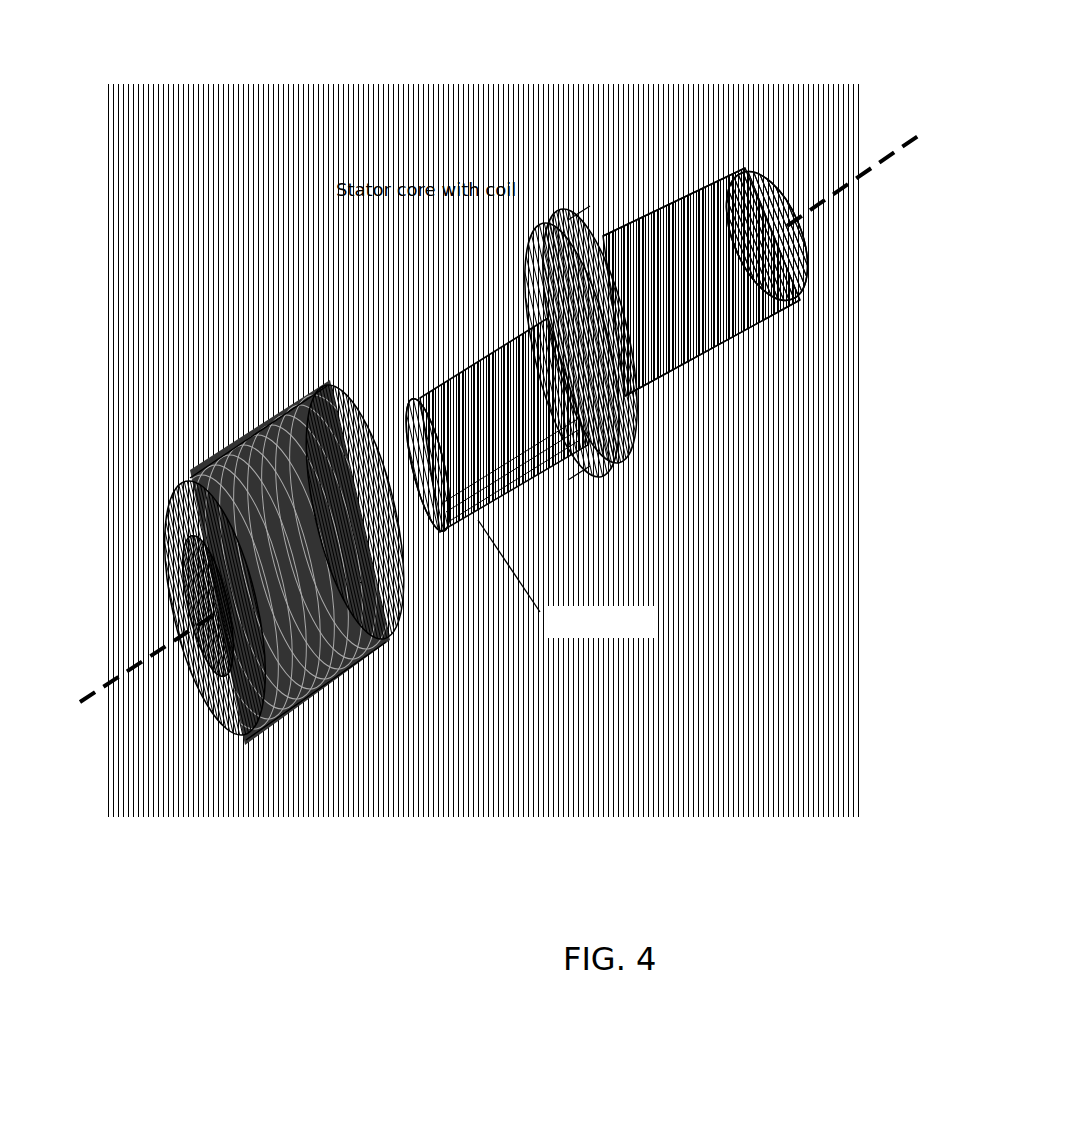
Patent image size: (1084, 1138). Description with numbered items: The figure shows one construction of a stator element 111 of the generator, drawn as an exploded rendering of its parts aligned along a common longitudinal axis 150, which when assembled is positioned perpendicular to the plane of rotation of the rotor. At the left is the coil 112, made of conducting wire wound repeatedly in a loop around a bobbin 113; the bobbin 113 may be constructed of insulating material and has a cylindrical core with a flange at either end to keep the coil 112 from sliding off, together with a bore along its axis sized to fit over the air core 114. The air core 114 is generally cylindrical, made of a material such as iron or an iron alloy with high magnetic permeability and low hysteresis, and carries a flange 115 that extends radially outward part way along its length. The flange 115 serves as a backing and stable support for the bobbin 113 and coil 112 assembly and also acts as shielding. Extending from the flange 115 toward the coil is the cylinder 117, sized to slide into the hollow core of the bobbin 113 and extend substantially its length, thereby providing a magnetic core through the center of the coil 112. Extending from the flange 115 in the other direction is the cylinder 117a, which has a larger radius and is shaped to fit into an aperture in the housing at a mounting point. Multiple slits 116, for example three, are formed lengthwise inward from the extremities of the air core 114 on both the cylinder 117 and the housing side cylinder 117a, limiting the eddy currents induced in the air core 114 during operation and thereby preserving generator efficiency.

The stator element 111 is at (290, 222).
The coil 112 is at (318, 670).
The bobbin 113 is at (232, 722).
The air core 114 is at (611, 170).
The flange 115 is at (622, 440).
The slits 116 is at (428, 490).
The cylinder 117 is at (533, 415).
The cylinder 117a is at (790, 262).
The longitudinal axis 150 is at (108, 690).